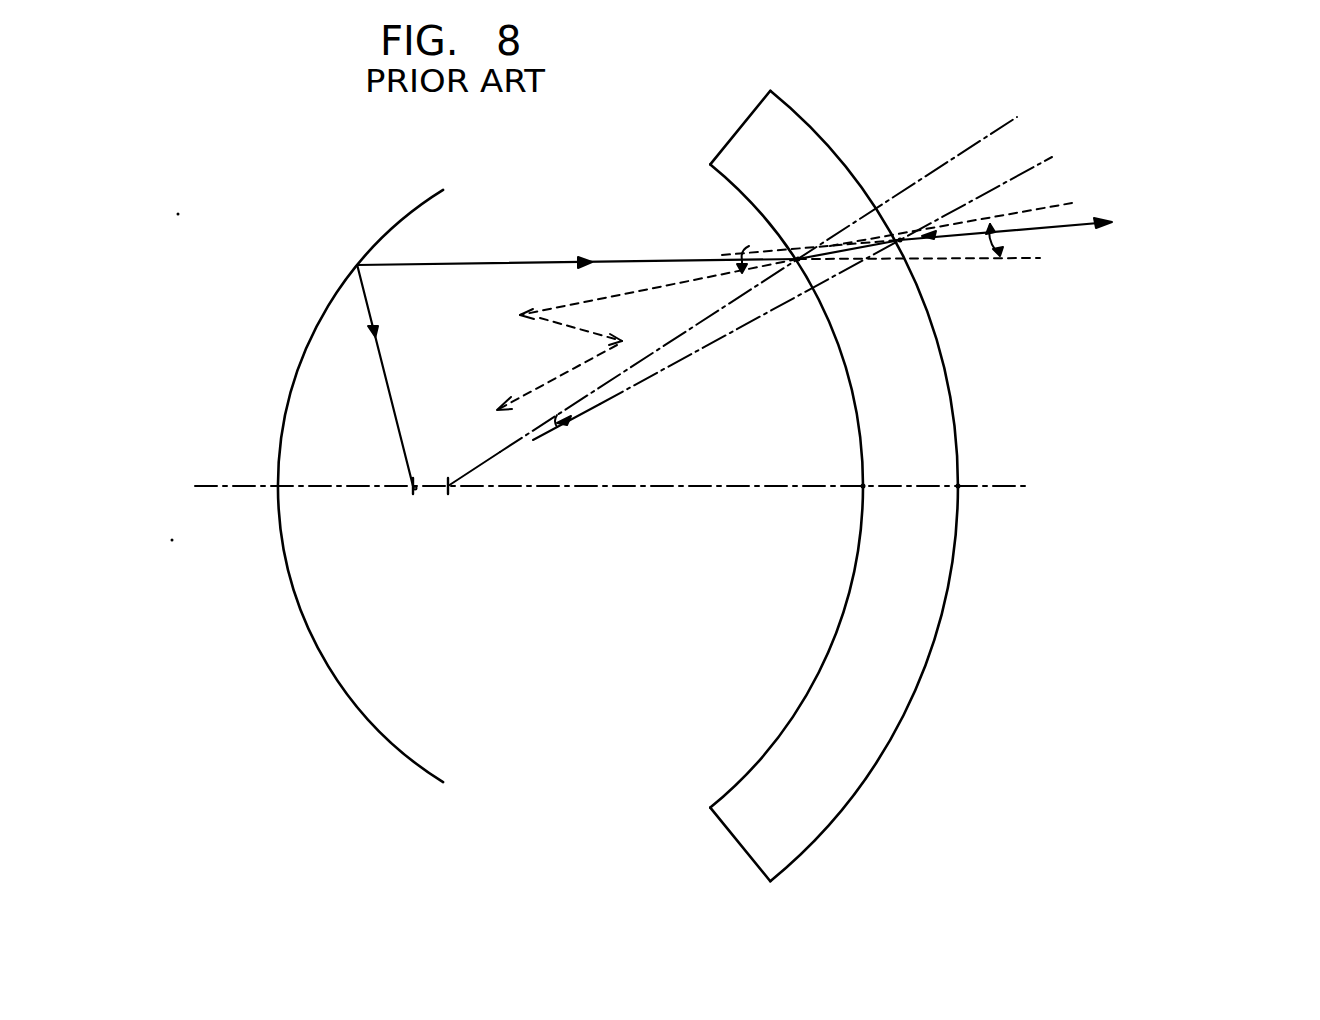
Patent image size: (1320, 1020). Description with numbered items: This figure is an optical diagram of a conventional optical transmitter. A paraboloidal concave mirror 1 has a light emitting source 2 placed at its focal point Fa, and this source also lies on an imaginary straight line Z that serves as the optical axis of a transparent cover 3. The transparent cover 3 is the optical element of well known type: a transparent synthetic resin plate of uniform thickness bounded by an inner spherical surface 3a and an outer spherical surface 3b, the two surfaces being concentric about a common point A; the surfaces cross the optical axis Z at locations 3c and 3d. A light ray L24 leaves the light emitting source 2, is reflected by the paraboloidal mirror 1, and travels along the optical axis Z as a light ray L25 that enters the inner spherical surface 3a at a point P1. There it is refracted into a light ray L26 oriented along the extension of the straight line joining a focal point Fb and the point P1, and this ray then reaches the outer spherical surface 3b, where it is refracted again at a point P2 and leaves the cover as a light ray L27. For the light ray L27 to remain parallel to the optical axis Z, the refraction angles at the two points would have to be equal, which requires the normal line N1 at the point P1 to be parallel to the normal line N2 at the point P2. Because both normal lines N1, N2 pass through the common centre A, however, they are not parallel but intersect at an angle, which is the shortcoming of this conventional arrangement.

The paraboloidal concave mirror 1 is at (300, 373).
The light emitting source 2 is at (417, 490).
The transparent cover 3 is at (876, 486).
The inner spherical surface 3a is at (789, 720).
The outer spherical surface 3b is at (886, 748).
The inner surface vertex on axis 3c is at (862, 490).
The outer surface vertex on axis 3d is at (960, 482).
The common centre A is at (450, 490).
The focal point Fa is at (413, 488).
The focal point Fb is at (474, 421).
The optical axis Z is at (627, 485).
The light ray L24 is at (382, 358).
The light ray L25 is at (505, 264).
The light ray L26 is at (812, 278).
The light ray L27 is at (1073, 222).
The normal line N1 is at (993, 133).
The normal line N2 is at (1043, 159).
The point P1 is at (798, 258).
The point P2 is at (906, 240).